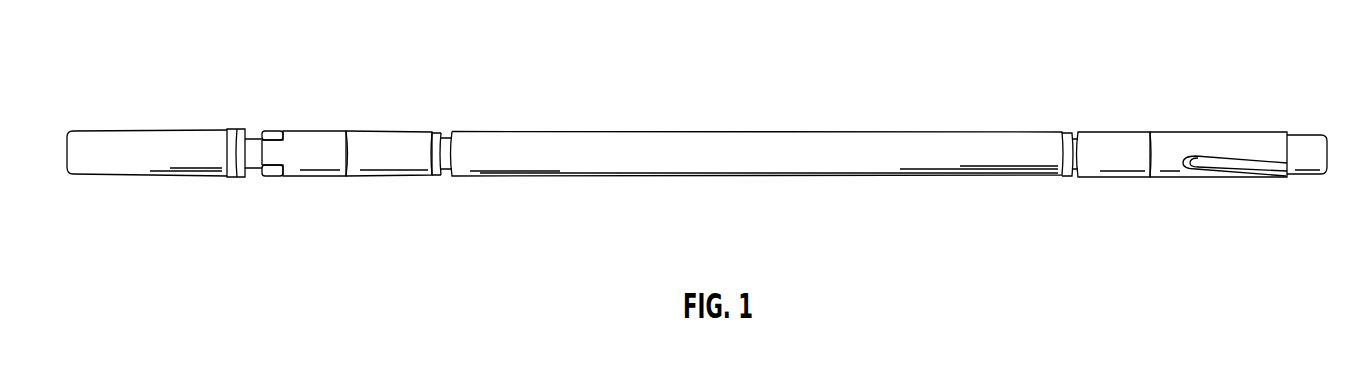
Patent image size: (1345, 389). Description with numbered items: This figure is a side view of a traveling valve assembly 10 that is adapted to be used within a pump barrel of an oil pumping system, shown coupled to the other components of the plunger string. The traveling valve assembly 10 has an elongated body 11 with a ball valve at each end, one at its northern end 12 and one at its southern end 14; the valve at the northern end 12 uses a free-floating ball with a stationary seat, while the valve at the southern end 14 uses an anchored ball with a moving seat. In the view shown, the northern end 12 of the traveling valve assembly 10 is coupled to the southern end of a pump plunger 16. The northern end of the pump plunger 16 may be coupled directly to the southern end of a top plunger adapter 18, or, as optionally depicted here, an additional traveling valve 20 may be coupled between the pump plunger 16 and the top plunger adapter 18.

The traveling valve assembly 10 is at (437, 182).
The elongated body 11 is at (212, 81).
The northern end 12 is at (369, 111).
The southern end 14 is at (137, 109).
The pump plunger 16 is at (784, 113).
The top plunger adapter 18 is at (1242, 118).
The additional traveling valve 20 is at (1108, 118).